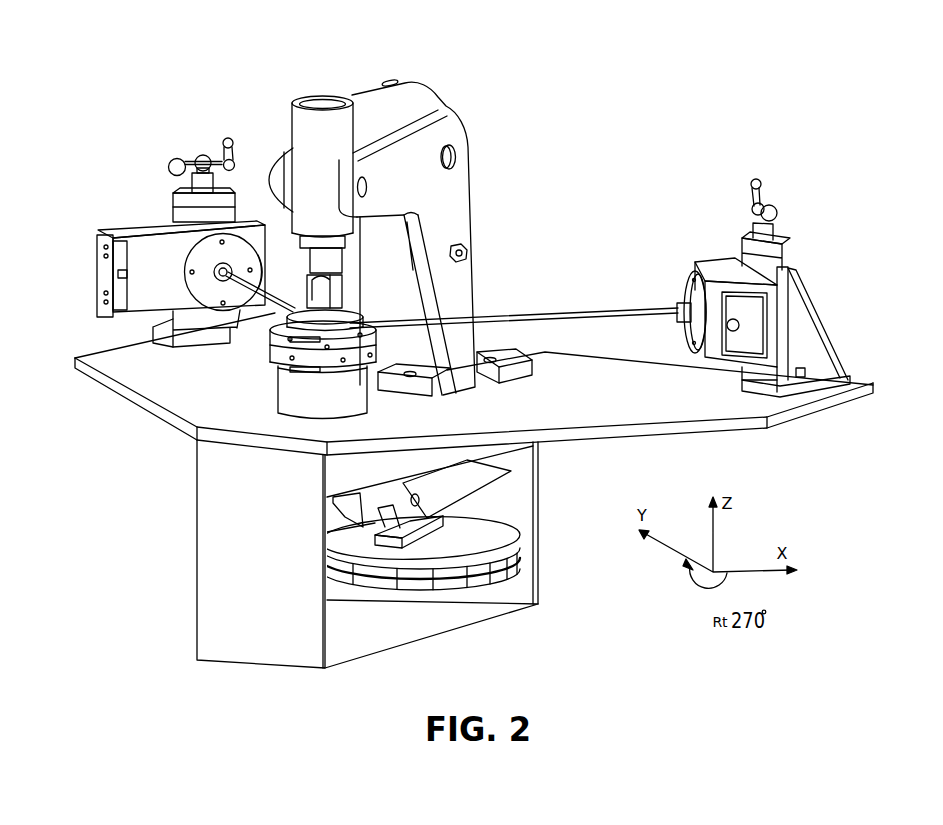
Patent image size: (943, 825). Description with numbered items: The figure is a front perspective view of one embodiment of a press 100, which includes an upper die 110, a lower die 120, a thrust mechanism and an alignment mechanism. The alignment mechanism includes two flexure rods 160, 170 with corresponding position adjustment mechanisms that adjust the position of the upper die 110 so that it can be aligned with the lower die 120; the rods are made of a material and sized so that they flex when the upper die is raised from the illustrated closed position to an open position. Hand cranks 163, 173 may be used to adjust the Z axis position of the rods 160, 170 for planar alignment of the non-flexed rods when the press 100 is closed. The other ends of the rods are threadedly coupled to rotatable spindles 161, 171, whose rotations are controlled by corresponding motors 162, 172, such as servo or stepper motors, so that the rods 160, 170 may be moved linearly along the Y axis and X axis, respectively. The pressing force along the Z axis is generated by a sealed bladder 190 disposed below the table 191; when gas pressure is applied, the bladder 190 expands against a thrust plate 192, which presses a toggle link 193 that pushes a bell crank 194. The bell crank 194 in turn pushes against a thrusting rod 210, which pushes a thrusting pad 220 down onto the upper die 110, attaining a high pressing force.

The press 100 is at (573, 48).
The upper die 110 is at (277, 335).
The lower die 120 is at (275, 366).
The flexure rod 160 is at (258, 298).
The spindle 161 is at (168, 240).
The motor 162 is at (168, 232).
The hand crank 163 is at (203, 156).
The flexure rod 170 is at (525, 318).
The spindle 171 is at (688, 300).
The motor 172 is at (742, 277).
The hand crank 173 is at (775, 212).
The sealed bladder 190 is at (521, 553).
The table 191 is at (808, 414).
The thrust plate 192 is at (467, 532).
The toggle link 193 is at (473, 501).
The bell crank 194 is at (457, 194).
The thrusting rod 210 is at (318, 259).
The thrusting pad 220 is at (273, 323).